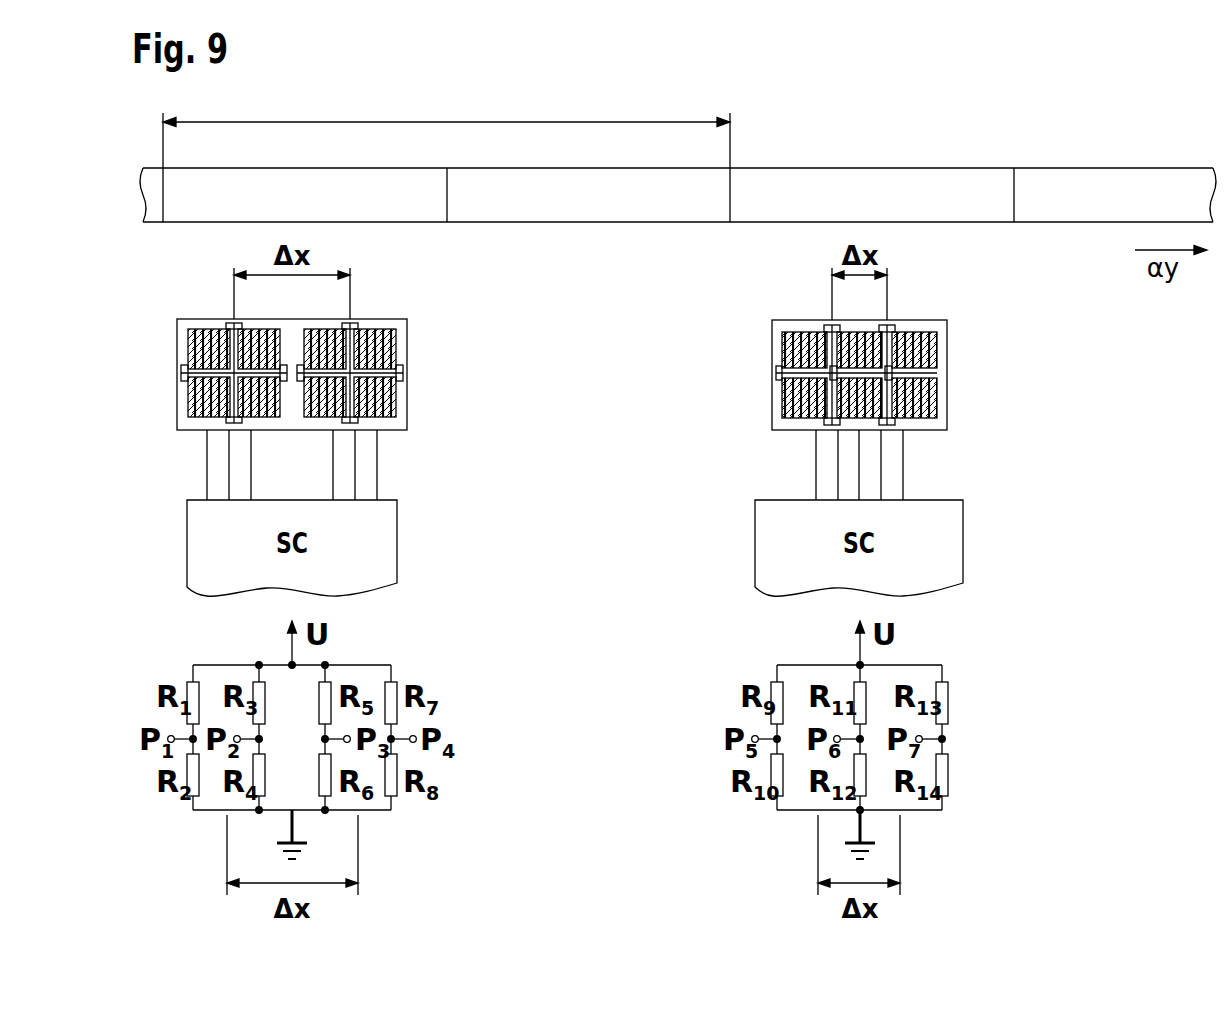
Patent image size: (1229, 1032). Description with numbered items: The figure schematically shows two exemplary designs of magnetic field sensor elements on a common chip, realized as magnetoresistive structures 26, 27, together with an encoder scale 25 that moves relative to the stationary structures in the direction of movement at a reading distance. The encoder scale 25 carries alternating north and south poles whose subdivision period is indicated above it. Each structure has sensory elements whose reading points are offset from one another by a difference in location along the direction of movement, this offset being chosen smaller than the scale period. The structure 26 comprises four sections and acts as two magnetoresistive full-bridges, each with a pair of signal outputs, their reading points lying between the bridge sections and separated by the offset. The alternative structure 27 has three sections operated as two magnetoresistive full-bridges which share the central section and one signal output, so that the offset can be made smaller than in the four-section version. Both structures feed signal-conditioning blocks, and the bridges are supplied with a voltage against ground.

The encoder scale 25 is at (659, 210).
The magnetoresistive structure 26 is at (398, 330).
The magnetoresistive structure 27 is at (940, 332).